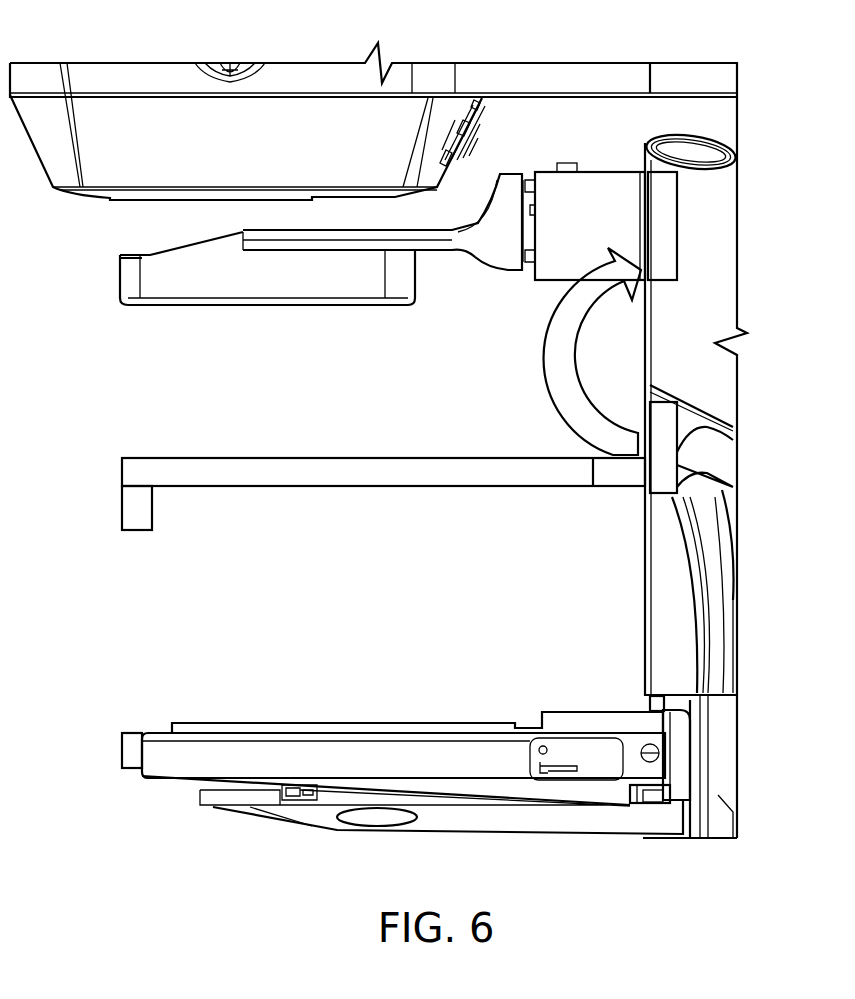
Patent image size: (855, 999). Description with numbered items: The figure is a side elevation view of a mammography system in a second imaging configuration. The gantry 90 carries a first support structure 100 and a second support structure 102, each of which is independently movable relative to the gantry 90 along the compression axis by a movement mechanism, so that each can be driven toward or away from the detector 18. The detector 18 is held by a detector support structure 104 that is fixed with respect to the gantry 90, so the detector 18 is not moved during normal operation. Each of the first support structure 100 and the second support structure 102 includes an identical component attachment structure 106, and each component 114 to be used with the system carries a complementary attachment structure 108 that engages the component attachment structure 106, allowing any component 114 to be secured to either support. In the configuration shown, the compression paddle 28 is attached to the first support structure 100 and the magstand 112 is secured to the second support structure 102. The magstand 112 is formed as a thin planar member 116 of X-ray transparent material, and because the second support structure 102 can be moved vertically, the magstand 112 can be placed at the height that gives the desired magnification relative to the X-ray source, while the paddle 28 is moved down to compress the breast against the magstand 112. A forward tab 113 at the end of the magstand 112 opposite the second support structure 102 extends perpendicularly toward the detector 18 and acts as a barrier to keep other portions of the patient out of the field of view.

The detector 18 is at (243, 817).
The compression paddle 28 is at (222, 266).
The gantry 90 is at (705, 618).
The first support structure 100 is at (690, 205).
The second support structure 102 is at (690, 415).
The detector support structure 104 is at (673, 807).
The component attachment structure 106 is at (667, 247).
The complementary attachment structure 108 is at (607, 170).
The magstand 112 is at (312, 490).
The forward tab 113 is at (122, 507).
The component 114 is at (104, 285).
The planar member 116 is at (345, 470).